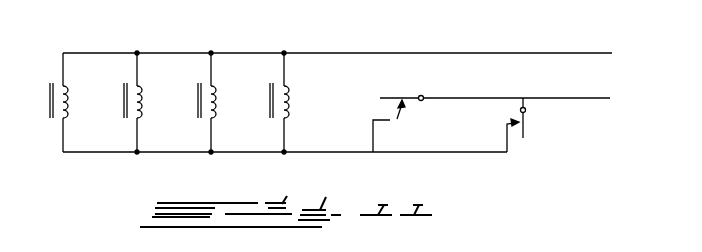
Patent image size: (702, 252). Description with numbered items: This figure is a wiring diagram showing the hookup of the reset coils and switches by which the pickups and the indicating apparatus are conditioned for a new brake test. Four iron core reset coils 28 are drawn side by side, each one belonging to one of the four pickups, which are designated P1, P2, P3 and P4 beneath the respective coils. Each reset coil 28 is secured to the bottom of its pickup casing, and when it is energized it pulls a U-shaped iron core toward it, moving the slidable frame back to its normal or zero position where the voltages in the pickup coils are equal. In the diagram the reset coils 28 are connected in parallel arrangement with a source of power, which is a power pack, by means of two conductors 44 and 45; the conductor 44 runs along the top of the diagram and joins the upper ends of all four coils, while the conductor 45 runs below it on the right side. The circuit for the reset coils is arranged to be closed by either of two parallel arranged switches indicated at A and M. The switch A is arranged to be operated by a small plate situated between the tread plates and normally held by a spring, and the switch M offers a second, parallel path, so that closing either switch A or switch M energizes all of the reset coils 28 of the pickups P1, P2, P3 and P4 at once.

The reset coil 28 is at (70, 100).
The conductor 44 is at (480, 53).
The conductor 45 is at (562, 98).
The switch A is at (388, 120).
The switch M is at (509, 136).
The pickup P1 is at (78, 157).
The pickup P2 is at (141, 164).
The pickup P3 is at (215, 164).
The pickup P4 is at (289, 164).